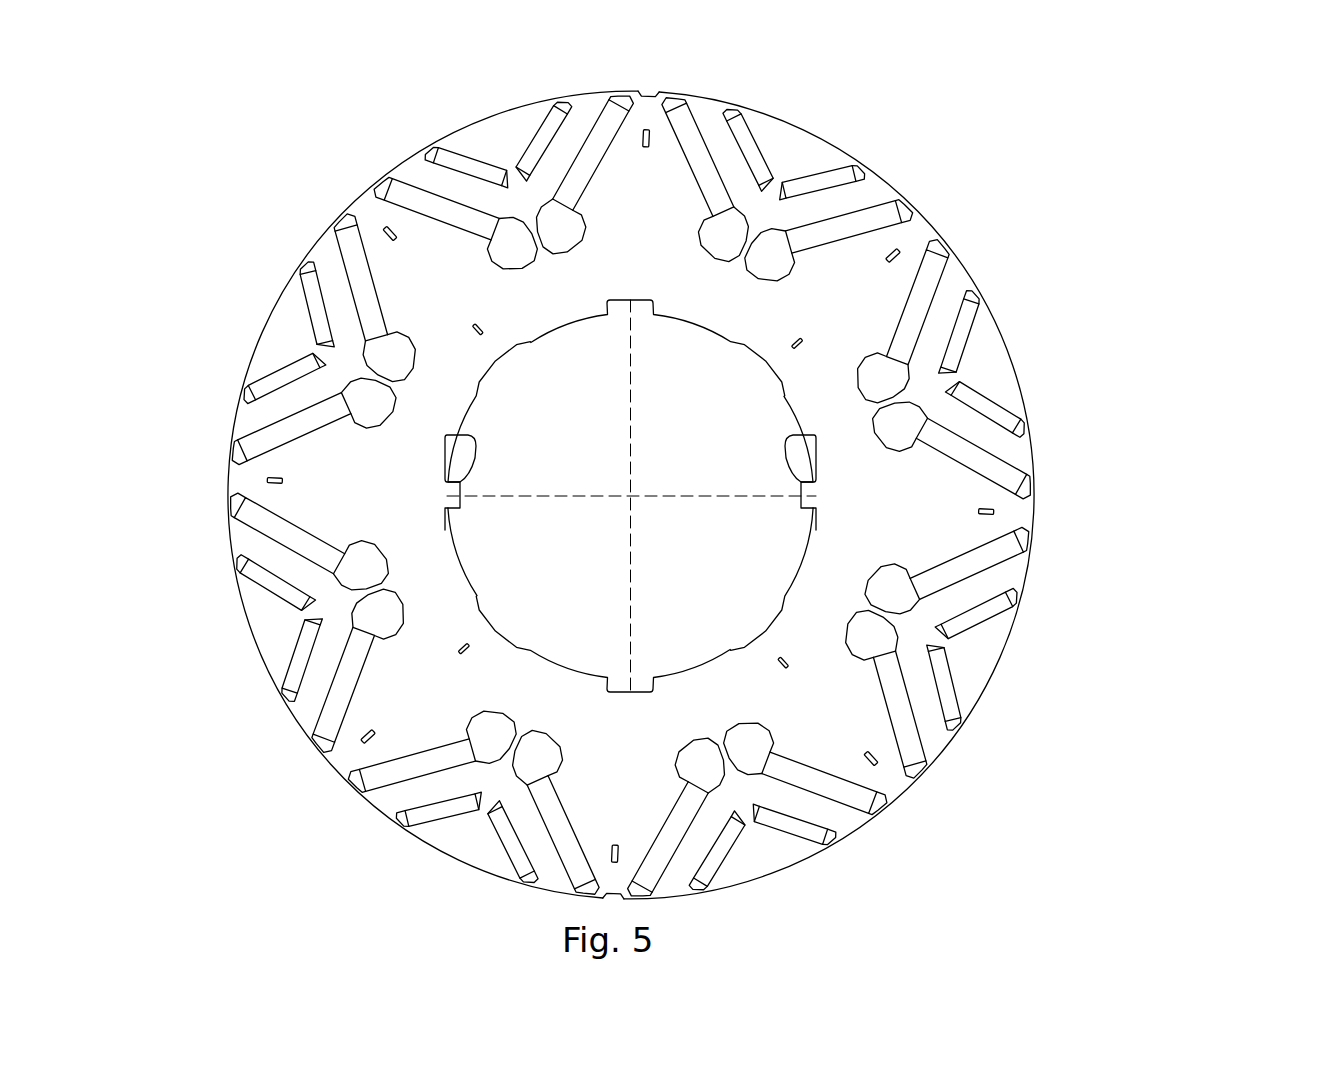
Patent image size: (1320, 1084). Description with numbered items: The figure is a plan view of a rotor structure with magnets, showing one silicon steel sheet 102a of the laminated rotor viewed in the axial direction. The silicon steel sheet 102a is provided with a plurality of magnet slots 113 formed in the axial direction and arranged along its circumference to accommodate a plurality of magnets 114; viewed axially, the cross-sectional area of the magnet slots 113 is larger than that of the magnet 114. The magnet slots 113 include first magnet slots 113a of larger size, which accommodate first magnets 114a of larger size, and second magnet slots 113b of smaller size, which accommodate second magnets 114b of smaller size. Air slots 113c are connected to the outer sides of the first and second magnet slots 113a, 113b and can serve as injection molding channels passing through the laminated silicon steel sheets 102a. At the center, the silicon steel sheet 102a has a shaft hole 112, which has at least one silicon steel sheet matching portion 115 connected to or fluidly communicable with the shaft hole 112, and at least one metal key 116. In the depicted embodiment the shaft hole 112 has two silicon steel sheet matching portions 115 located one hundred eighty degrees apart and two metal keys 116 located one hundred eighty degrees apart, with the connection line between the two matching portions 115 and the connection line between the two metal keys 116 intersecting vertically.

The silicon steel sheet 102a is at (194, 147).
The shaft hole 112 is at (760, 533).
The magnet slots 113 is at (1030, 160).
The first magnet slots 113a is at (871, 229).
The second magnet slots 113b is at (840, 183).
The air slots 113c is at (862, 173).
The magnets 114 is at (1228, 63).
The first magnets 114a is at (704, 172).
The second magnets 114b is at (752, 150).
The silicon steel sheet matching portion 115 is at (625, 300).
The metal key 116 is at (470, 434).